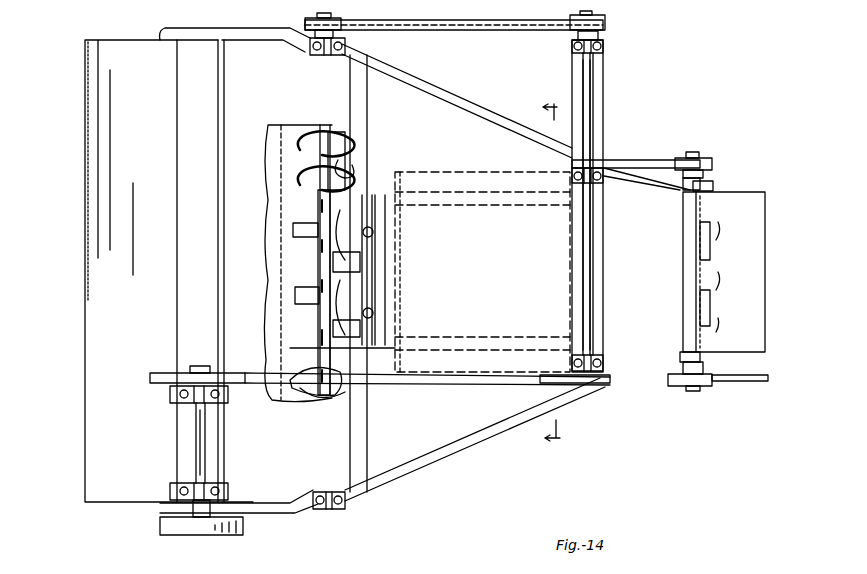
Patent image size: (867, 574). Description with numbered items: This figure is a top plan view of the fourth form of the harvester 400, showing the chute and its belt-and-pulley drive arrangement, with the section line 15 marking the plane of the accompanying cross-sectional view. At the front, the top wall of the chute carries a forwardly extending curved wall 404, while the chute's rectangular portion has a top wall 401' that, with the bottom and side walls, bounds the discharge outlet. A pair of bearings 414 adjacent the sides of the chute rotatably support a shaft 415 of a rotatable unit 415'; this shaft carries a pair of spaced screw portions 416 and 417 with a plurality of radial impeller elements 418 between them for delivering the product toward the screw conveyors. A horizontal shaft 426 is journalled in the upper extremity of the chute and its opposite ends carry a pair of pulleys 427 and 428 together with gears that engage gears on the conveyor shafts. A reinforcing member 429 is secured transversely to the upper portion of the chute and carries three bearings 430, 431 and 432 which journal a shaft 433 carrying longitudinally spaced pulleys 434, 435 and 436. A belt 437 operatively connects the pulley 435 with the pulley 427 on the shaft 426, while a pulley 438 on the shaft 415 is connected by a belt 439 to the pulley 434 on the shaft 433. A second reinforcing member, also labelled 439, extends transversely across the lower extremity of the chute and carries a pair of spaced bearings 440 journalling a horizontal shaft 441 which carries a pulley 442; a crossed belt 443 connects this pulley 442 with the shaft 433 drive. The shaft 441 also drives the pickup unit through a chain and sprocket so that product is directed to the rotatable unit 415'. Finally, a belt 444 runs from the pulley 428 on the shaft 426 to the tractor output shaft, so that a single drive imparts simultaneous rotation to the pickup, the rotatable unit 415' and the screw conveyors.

The section line 15- 15 is at (554, 272).
The harvester 400 is at (615, 71).
The top wall of rectangular portion 401' is at (729, 257).
The forwardly extending curved wall 404 is at (105, 163).
The bearings 414 is at (330, 46).
The shaft 415 is at (292, 263).
The rotatable unit 415' is at (287, 165).
The screw portion 416 is at (352, 166).
The screw portion 417 is at (346, 394).
The radial impeller elements 418 is at (326, 261).
The horizontal shaft 426 is at (690, 156).
The pulley 427 is at (712, 158).
The pulley 428 is at (710, 390).
The reinforcing member 429 is at (600, 232).
The bearing 430 is at (572, 58).
The bearing 431 is at (598, 185).
The bearing 432 is at (590, 357).
The shaft 433 is at (595, 255).
The pulley 434 is at (580, 13).
The pulley 435 is at (598, 160).
The pulley 436 is at (598, 386).
The belt 437 is at (633, 160).
The pulley 438 is at (340, 22).
The belt / reinforcing member 439 is at (190, 130).
The bearings 440 is at (190, 397).
The horizontal shaft 441 is at (200, 440).
The pulley 442 is at (168, 372).
The crossed belt 443 is at (470, 384).
The belt 444 is at (740, 382).